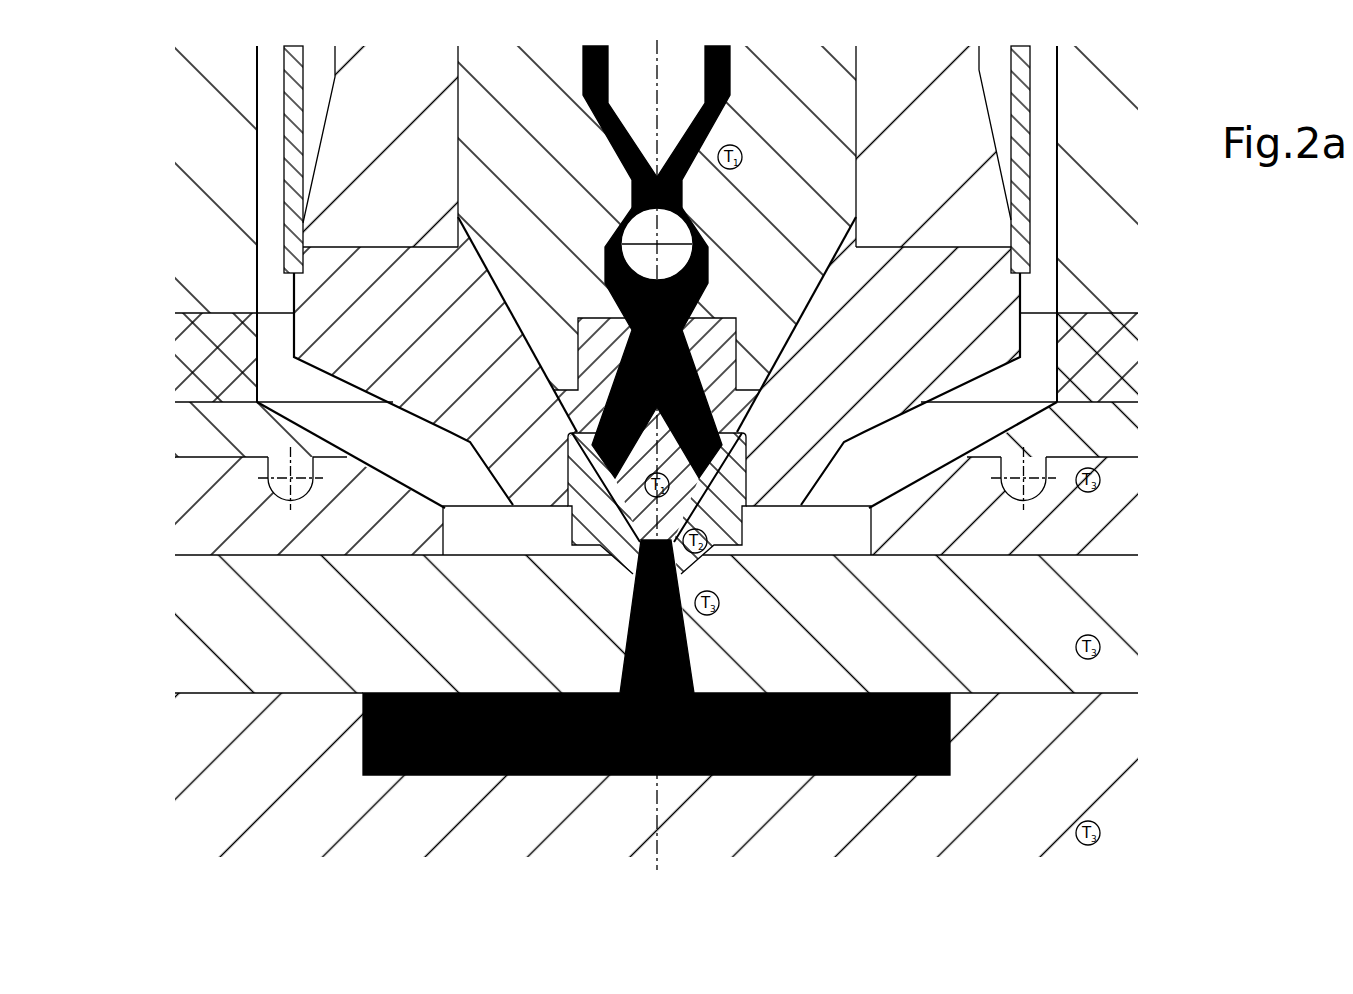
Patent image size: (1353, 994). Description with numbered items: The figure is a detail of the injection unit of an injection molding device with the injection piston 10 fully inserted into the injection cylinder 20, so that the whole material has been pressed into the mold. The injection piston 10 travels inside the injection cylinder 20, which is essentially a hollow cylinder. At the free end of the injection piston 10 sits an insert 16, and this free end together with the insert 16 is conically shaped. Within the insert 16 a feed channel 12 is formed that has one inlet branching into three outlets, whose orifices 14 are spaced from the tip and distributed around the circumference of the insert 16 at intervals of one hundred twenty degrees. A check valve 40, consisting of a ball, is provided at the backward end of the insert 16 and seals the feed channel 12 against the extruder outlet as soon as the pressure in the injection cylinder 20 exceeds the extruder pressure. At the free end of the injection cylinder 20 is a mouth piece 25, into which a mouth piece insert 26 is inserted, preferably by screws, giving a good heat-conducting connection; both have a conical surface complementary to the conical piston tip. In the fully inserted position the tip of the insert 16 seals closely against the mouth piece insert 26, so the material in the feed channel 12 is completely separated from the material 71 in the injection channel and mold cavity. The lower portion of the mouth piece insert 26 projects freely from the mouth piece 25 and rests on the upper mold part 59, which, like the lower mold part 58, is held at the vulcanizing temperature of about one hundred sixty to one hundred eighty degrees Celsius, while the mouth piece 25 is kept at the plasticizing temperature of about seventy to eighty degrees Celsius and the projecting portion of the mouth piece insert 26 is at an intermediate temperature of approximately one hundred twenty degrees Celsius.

The injection piston 10 is at (657, 239).
The feed channel 12 is at (606, 395).
The orifices 14 is at (700, 475).
The insert 16 is at (706, 358).
The injection cylinder 20 is at (933, 146).
The mouth piece 25 is at (878, 361).
The mouth piece insert 26 is at (628, 531).
The check valve 40 is at (657, 244).
The lower mold part 58 is at (656, 775).
The upper mold part 59 is at (656, 624).
The material 71 is at (684, 588).